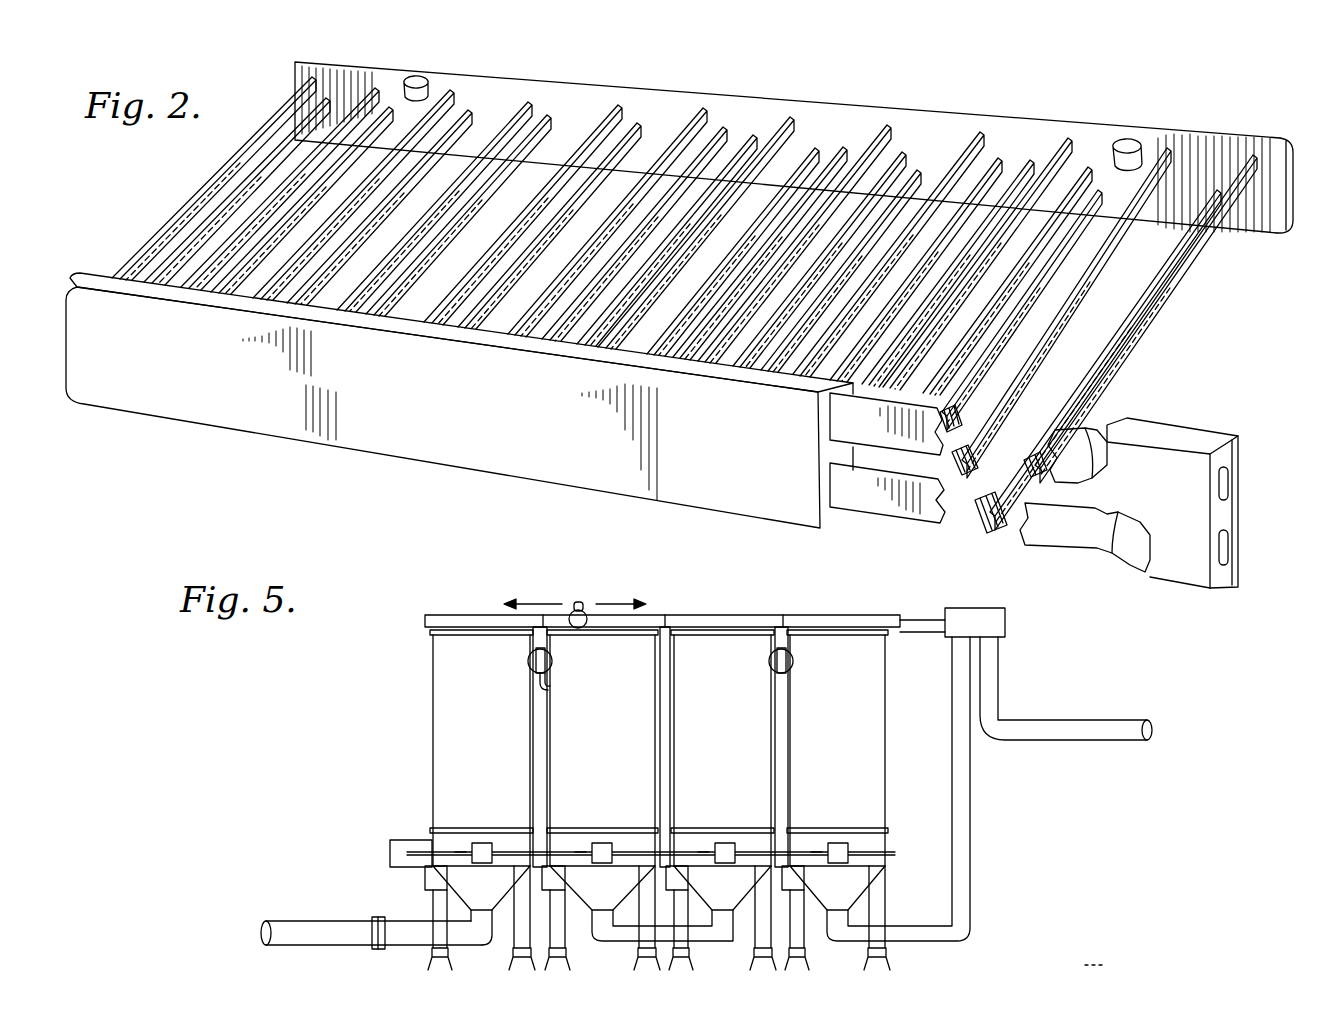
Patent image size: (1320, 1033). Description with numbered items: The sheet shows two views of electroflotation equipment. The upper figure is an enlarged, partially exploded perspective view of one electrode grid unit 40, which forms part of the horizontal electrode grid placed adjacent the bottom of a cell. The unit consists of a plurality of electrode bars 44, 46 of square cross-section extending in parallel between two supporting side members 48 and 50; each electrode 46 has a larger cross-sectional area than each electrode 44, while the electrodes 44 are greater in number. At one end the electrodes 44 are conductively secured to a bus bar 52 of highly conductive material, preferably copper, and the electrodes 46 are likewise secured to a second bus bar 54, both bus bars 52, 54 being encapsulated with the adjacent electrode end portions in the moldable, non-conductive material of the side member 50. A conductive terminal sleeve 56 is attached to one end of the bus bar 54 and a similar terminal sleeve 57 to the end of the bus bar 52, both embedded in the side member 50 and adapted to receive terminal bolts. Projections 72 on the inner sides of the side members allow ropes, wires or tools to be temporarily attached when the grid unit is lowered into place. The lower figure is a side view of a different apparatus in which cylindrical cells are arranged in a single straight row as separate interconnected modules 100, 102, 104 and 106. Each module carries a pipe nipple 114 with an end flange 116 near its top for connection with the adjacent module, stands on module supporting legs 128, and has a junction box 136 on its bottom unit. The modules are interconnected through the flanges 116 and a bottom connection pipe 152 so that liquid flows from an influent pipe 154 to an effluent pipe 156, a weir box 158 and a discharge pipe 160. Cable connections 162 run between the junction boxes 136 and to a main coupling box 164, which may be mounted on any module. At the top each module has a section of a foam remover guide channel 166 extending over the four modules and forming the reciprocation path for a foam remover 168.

In FIG. 2, the electrode grid unit 40 is at (738, 97).
In FIG. 2, the electrode bars 44 is at (963, 143).
In FIG. 2, the electrode bars 46 is at (1010, 497).
In FIG. 2, the supporting side member 48 is at (1225, 140).
In FIG. 2, the supporting side member 50 is at (790, 503).
In FIG. 2, the bus bar 52 is at (847, 413).
In FIG. 2, the second bus bar 54 is at (900, 502).
In FIG. 2, the conductive terminal sleeve 56 is at (1130, 543).
In FIG. 2, the terminal sleeve 57 is at (1227, 477).
In FIG. 2, the projections 72 is at (424, 82).
In FIG. 5, the module 100 is at (423, 754).
In FIG. 5, the module 102 is at (607, 748).
In FIG. 5, the module 104 is at (738, 748).
In FIG. 5, the module 106 is at (897, 701).
In FIG. 5, the pipe nipple 114 is at (528, 660).
In FIG. 5, the end flange 116 is at (551, 686).
In FIG. 5, the module supporting legs 128 is at (563, 932).
In FIG. 5, the junction box 136 is at (495, 843).
In FIG. 5, the bottom connection pipe 152 is at (690, 936).
In FIG. 5, the influent pipe 154 is at (394, 928).
In FIG. 5, the effluent pipe 156 is at (950, 934).
In FIG. 5, the weir box 158 is at (1003, 627).
In FIG. 5, the discharge pipe 160 is at (990, 680).
In FIG. 5, the cable connections 162 is at (477, 812).
In FIG. 5, the main coupling box 164 is at (390, 846).
In FIG. 5, the foam remover guide channel 166 is at (476, 612).
In FIG. 5, the foam remover 168 is at (594, 563).